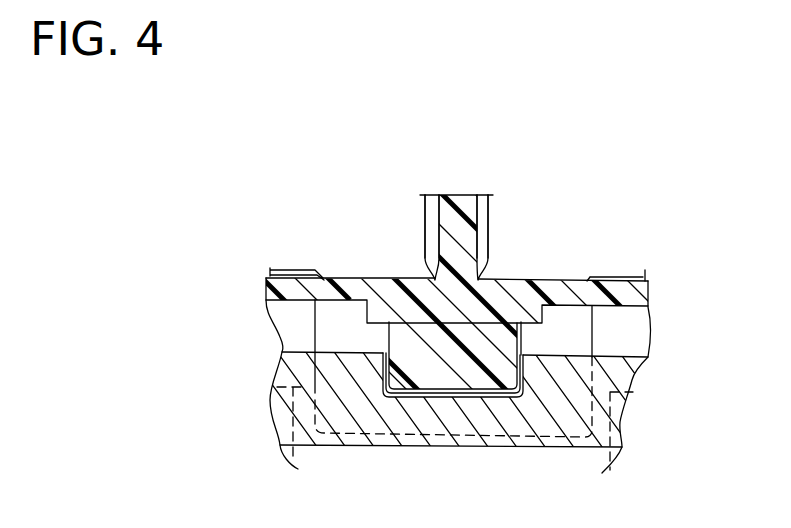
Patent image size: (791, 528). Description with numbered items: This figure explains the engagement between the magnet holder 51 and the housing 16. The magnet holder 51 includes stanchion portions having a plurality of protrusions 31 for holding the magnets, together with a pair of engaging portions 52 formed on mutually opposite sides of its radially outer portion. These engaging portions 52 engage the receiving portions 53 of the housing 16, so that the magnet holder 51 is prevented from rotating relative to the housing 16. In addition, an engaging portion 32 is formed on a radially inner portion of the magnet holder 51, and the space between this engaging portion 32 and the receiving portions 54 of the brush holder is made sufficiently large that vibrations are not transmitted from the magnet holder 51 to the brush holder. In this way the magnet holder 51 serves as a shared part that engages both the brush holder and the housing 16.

The housing 16 is at (580, 447).
The protrusions 31 is at (489, 226).
The engaging portion 32 is at (337, 328).
The magnet holder 51 is at (627, 280).
The engaging portion 52 is at (493, 340).
The receiving portions 53 is at (396, 352).
The receiving portions 54 is at (295, 447).